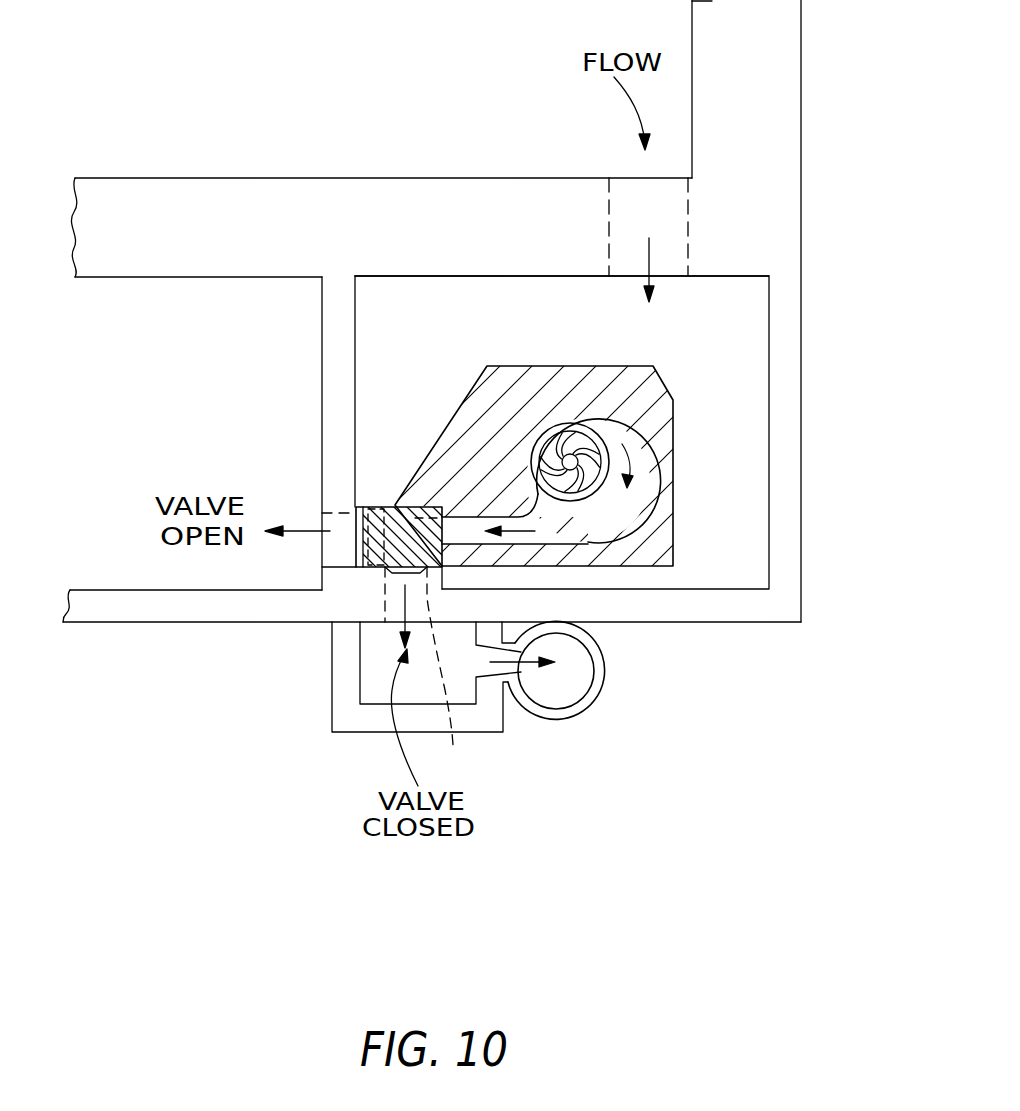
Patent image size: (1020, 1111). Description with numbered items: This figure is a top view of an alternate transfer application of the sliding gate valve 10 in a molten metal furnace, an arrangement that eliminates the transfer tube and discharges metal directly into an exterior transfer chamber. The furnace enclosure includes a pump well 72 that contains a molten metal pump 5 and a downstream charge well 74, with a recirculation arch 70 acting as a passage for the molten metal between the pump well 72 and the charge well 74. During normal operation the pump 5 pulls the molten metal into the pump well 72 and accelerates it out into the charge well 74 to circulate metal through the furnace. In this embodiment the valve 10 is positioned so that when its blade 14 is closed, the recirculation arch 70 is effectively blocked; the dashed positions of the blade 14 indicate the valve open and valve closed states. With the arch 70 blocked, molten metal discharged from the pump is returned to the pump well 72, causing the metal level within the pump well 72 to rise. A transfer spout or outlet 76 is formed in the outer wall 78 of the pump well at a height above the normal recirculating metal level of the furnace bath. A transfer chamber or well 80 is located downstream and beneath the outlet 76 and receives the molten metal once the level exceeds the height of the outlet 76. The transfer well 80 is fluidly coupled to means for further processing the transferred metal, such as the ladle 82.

The molten metal pump 5 is at (673, 514).
The molten metal sliding gate valve 10 is at (452, 553).
The blade 14 is at (379, 500).
The recirculation arch 70 is at (338, 553).
The pump well 72 is at (718, 366).
The charge well 74 is at (144, 564).
The transfer spout or outlet 76 is at (441, 672).
The outer wall 78 is at (737, 622).
The transfer chamber or well 80 is at (464, 683).
The ladle 82 is at (570, 688).